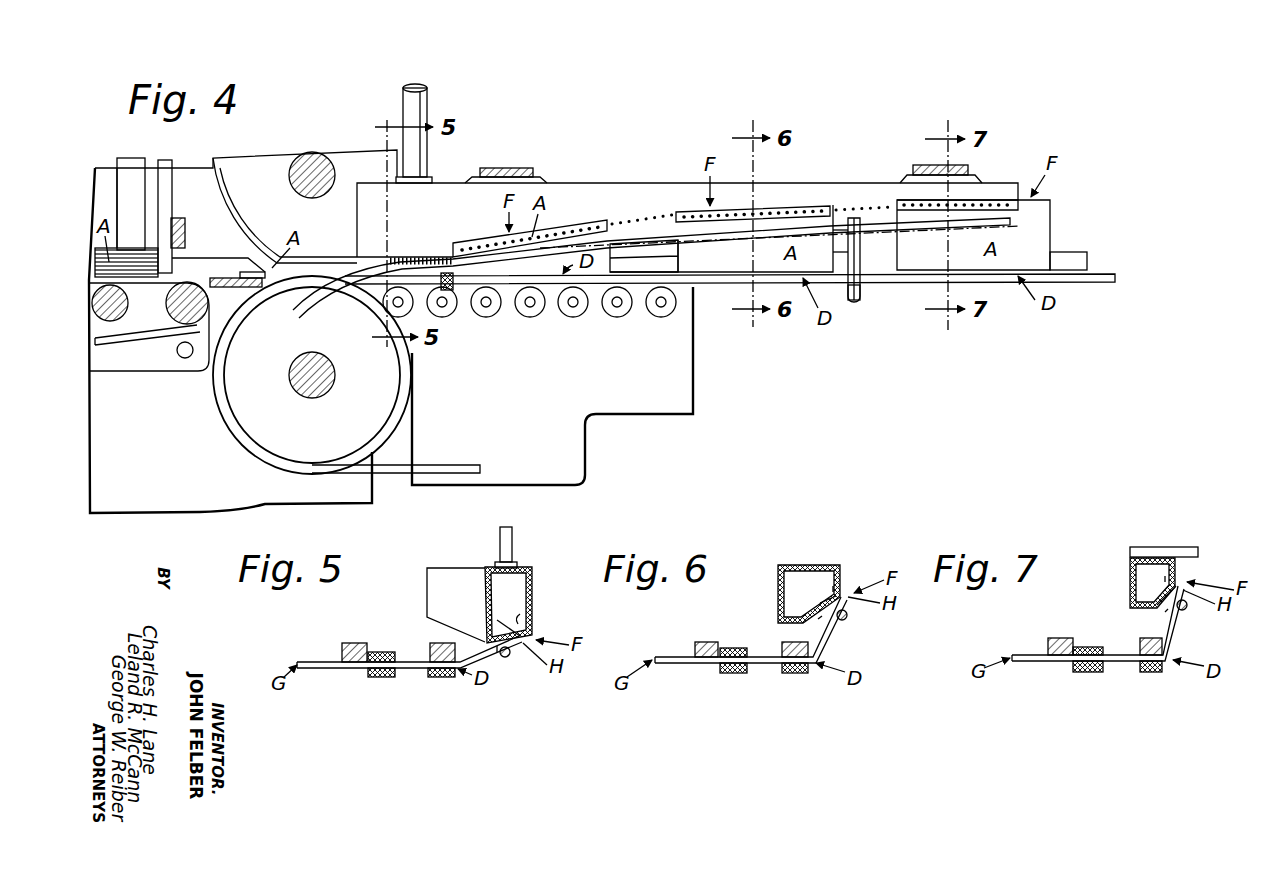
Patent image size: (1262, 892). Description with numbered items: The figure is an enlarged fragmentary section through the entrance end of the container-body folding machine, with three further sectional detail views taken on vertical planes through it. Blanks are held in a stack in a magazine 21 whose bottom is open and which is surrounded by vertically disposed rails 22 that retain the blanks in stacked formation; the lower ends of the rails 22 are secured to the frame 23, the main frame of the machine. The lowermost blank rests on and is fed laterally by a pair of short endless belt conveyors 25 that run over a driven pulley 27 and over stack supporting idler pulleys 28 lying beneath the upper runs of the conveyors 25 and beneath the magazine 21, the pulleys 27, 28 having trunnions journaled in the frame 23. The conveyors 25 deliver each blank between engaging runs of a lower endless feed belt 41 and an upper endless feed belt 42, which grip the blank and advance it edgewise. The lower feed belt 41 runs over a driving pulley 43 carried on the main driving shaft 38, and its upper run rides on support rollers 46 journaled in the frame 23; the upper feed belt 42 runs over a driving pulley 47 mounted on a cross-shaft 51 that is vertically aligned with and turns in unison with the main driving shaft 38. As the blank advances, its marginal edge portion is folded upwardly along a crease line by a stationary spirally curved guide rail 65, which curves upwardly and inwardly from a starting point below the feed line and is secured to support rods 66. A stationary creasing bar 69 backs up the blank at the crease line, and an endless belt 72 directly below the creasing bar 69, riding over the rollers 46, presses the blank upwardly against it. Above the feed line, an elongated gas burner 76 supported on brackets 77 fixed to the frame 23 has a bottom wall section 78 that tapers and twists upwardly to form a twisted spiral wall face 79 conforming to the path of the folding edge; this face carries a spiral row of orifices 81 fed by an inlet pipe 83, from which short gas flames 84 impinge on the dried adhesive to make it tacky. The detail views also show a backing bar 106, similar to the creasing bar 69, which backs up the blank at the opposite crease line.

In FIG. 4, the magazine 21 is at (108, 175).
In FIG. 4, the rails 22 is at (138, 170).
In FIG. 4, the frame 23 is at (213, 483).
In FIG. 4, the endless belt conveyors 25 is at (122, 341).
In FIG. 4, the driven pulley 27 is at (168, 308).
In FIG. 4, the stack supporting idler pulleys 28 is at (127, 300).
In FIG. 4, the main driving shaft 38 is at (320, 392).
In FIG. 4, the lower endless feed belt 41 is at (457, 465).
In FIG. 5, the lower endless feed belt 41 is at (380, 677).
In FIG. 6, the lower endless feed belt 41 is at (734, 674).
In FIG. 7, the lower endless feed belt 41 is at (1088, 673).
In FIG. 4, the upper endless feed belt 42 is at (222, 210).
In FIG. 5, the upper endless feed belt 42 is at (382, 652).
In FIG. 6, the upper endless feed belt 42 is at (735, 648).
In FIG. 7, the upper endless feed belt 42 is at (1090, 647).
In FIG. 4, the driving pulley 43 is at (384, 393).
In FIG. 4, the support rollers 46 is at (655, 309).
In FIG. 4, the driving pulley 47 is at (258, 170).
In FIG. 4, the cross-shaft 51 is at (313, 158).
In FIG. 4, the spirally curved guide rail 65 is at (638, 237).
In FIG. 5, the spirally curved guide rail 65 is at (508, 657).
In FIG. 6, the spirally curved guide rail 65 is at (848, 616).
In FIG. 7, the spirally curved guide rail 65 is at (1188, 608).
In FIG. 4, the support rods 66 is at (452, 292).
In FIG. 4, the creasing bar 69 is at (657, 263).
In FIG. 5, the creasing bar 69 is at (437, 643).
In FIG. 6, the creasing bar 69 is at (790, 642).
In FIG. 7, the creasing bar 69 is at (1148, 638).
In FIG. 5, the endless belt 72 is at (441, 677).
In FIG. 6, the endless belt 72 is at (795, 674).
In FIG. 7, the endless belt 72 is at (1150, 673).
In FIG. 4, the elongated gas burner 76 is at (573, 190).
In FIG. 5, the elongated gas burner 76 is at (533, 592).
In FIG. 6, the elongated gas burner 76 is at (841, 576).
In FIG. 7, the elongated gas burner 76 is at (1130, 575).
In FIG. 4, the brackets 77 is at (503, 170).
In FIG. 7, the brackets 77 is at (1190, 552).
In FIG. 5, the bottom wall section 78 is at (499, 620).
In FIG. 6, the bottom wall section 78 is at (820, 603).
In FIG. 7, the bottom wall section 78 is at (1160, 600).
In FIG. 4, the twisted spiral wall face 79 is at (851, 214).
In FIG. 5, the twisted spiral wall face 79 is at (497, 650).
In FIG. 6, the twisted spiral wall face 79 is at (821, 620).
In FIG. 7, the twisted spiral wall face 79 is at (1166, 613).
In FIG. 4, the orifices 81 is at (655, 217).
In FIG. 5, the orifices 81 is at (522, 616).
In FIG. 6, the orifices 81 is at (833, 586).
In FIG. 7, the orifices 81 is at (1165, 576).
In FIG. 4, the inlet pipe 83 is at (421, 97).
In FIG. 5, the inlet pipe 83 is at (513, 541).
In FIG. 4, the gas flames 84 is at (433, 257).
In FIG. 5, the gas flames 84 is at (531, 638).
In FIG. 6, the gas flames 84 is at (843, 597).
In FIG. 7, the gas flames 84 is at (1180, 587).
In FIG. 5, the backing bar 106 is at (350, 643).
In FIG. 6, the backing bar 106 is at (705, 642).
In FIG. 7, the backing bar 106 is at (1058, 638).